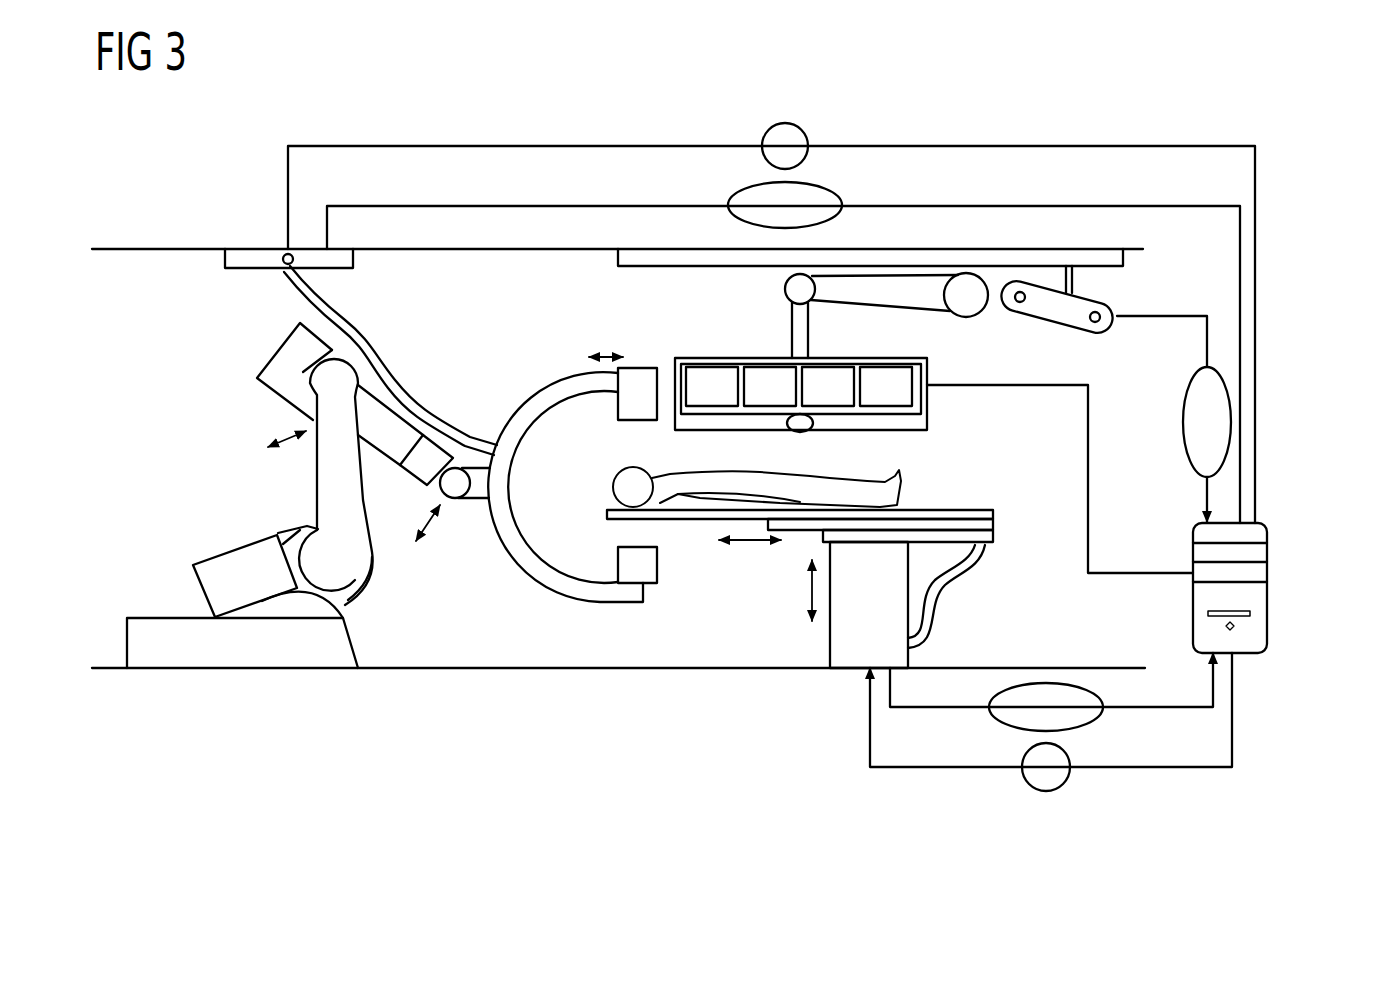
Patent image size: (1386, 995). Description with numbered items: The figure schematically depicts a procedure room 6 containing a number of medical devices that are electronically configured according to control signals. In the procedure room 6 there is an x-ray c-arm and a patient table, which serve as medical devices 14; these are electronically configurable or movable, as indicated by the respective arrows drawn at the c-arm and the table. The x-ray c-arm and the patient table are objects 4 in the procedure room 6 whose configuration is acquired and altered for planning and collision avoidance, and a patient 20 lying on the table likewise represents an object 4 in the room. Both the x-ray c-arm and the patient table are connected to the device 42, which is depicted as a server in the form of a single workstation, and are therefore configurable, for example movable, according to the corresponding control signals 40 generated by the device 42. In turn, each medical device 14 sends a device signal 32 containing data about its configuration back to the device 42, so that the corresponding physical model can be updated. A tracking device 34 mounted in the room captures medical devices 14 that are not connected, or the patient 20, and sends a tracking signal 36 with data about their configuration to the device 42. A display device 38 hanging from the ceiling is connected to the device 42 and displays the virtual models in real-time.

The object 4 is at (830, 650).
The procedure room 6 is at (165, 410).
The medical device 14 is at (245, 669).
The patient 20 is at (700, 519).
The device signal 32 is at (838, 190).
The tracking device 34 is at (1117, 302).
The tracking signal 36 is at (1183, 422).
The display device 38 is at (712, 378).
The control signal 40 is at (787, 122).
The device 42 is at (1290, 582).